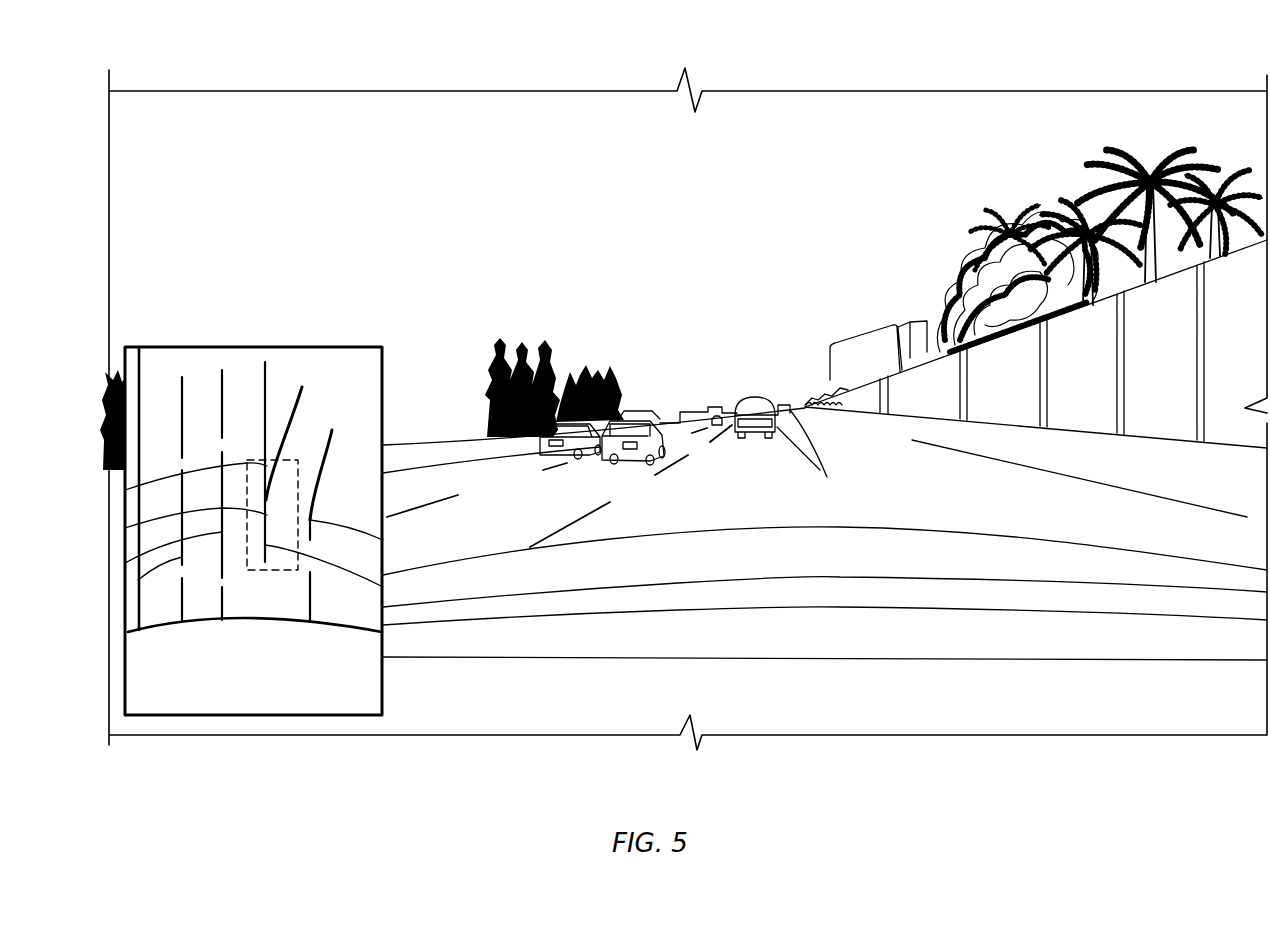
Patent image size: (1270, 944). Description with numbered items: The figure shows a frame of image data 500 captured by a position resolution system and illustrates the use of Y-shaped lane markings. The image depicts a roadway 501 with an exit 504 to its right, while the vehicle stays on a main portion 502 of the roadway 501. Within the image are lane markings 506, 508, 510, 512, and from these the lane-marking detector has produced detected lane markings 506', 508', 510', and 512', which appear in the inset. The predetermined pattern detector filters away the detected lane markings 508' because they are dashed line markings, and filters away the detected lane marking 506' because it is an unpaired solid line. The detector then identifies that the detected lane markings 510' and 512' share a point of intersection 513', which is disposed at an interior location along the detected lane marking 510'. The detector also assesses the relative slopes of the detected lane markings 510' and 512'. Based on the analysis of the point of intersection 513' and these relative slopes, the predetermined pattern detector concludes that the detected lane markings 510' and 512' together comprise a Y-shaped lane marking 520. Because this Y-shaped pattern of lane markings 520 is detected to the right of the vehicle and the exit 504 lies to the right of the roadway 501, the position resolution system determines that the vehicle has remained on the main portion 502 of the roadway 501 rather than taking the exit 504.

The frame of image data 500 is at (807, 117).
The roadway 501 is at (663, 318).
The main portion of the roadway 502 is at (613, 485).
The exit 504 is at (866, 350).
The lane marking 506 is at (594, 372).
The detected lane marking 506' is at (158, 438).
The lane markings 508 is at (825, 486).
The detected lane markings 508' is at (271, 495).
The lane marking 510 is at (1021, 465).
The detected lane marking 510' is at (383, 618).
The lane marking 512 is at (761, 453).
The detected lane marking 512' is at (138, 486).
The point of intersection 513' is at (138, 528).
The Y-shaped lane marking 520 is at (290, 458).